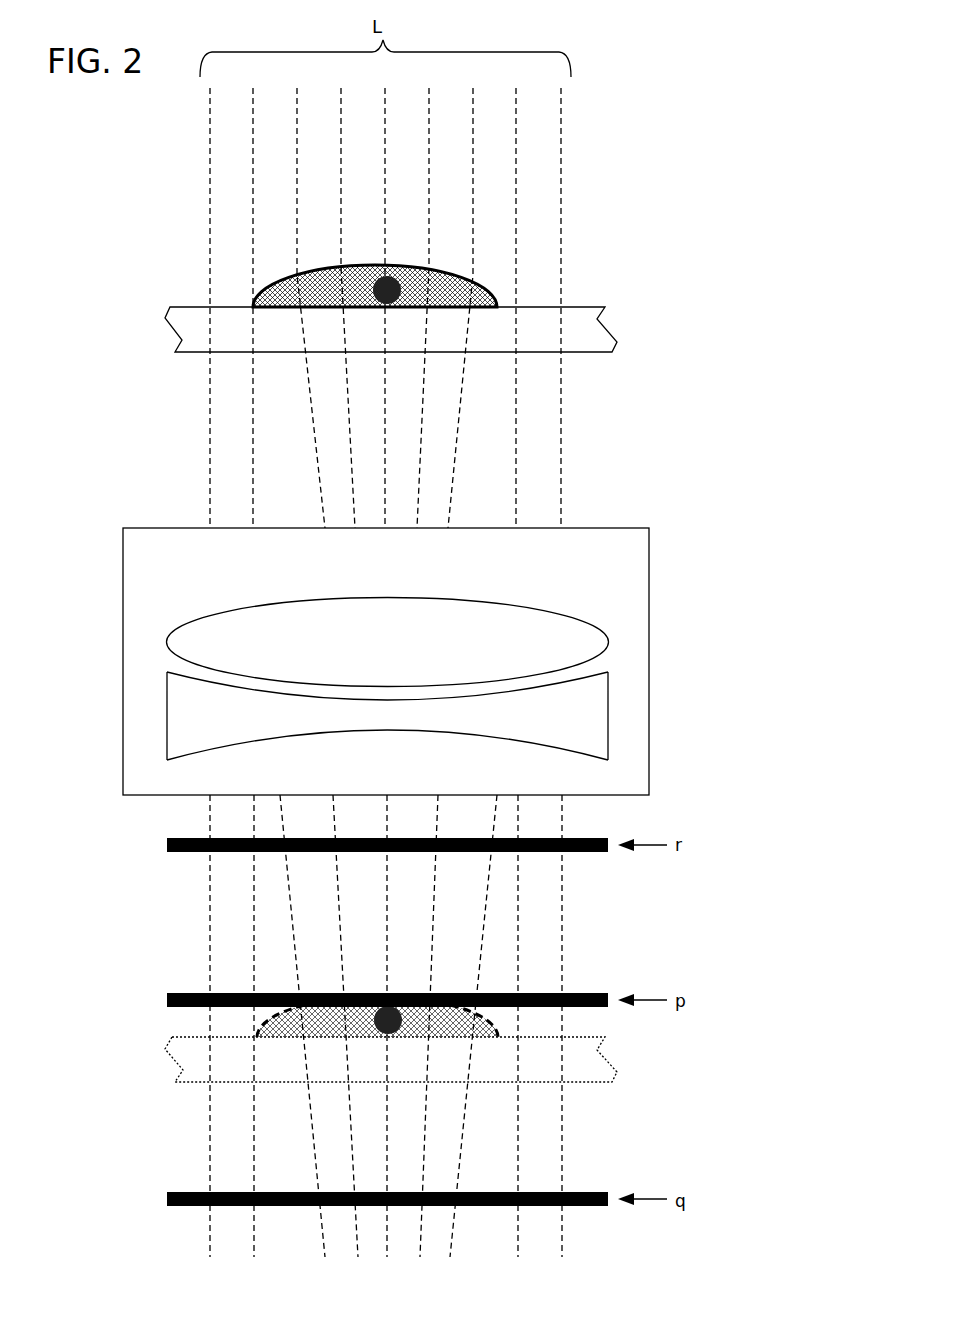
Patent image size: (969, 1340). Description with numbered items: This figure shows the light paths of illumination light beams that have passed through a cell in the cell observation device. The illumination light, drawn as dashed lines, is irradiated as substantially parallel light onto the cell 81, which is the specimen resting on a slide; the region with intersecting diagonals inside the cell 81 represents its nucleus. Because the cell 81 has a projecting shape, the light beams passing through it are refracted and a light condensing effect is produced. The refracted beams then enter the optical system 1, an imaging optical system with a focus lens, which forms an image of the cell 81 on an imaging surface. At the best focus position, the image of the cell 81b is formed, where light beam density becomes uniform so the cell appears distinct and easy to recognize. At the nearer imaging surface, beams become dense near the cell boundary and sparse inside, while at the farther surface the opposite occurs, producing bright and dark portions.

The cell 81 is at (447, 268).
The optical system 1 is at (585, 532).
The image of a cell 81b is at (493, 1030).